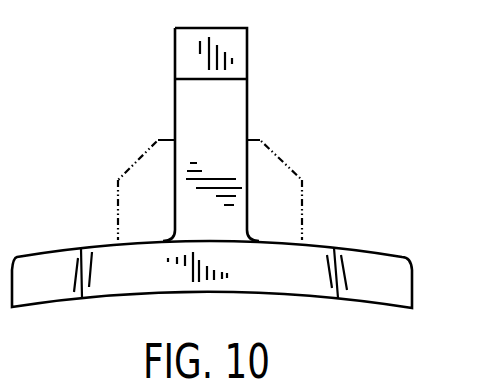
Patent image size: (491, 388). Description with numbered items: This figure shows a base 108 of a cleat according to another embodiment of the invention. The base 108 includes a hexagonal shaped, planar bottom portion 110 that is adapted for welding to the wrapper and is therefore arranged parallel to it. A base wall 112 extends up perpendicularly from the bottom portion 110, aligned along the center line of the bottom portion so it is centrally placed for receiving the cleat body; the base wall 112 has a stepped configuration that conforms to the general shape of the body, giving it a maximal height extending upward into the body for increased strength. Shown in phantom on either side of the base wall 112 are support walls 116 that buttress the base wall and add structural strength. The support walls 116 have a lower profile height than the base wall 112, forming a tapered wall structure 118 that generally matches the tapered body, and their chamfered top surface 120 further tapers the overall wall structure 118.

The base 108 is at (377, 55).
The bottom portion 110 is at (362, 303).
The base wall 112 is at (247, 104).
The support walls 116 is at (118, 213).
The tapered wall structure 118 is at (132, 103).
The chamfered top surface 120 is at (122, 144).